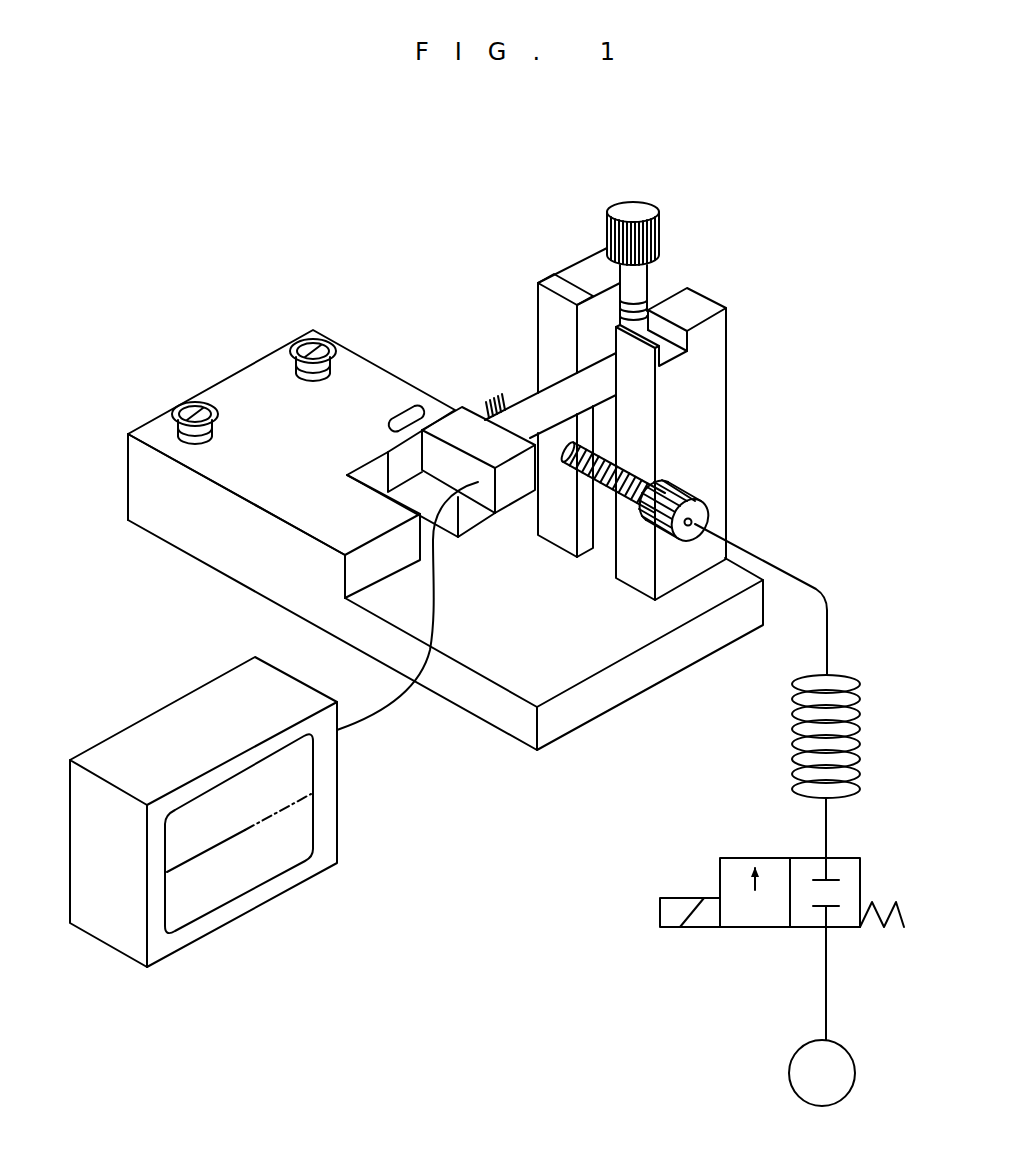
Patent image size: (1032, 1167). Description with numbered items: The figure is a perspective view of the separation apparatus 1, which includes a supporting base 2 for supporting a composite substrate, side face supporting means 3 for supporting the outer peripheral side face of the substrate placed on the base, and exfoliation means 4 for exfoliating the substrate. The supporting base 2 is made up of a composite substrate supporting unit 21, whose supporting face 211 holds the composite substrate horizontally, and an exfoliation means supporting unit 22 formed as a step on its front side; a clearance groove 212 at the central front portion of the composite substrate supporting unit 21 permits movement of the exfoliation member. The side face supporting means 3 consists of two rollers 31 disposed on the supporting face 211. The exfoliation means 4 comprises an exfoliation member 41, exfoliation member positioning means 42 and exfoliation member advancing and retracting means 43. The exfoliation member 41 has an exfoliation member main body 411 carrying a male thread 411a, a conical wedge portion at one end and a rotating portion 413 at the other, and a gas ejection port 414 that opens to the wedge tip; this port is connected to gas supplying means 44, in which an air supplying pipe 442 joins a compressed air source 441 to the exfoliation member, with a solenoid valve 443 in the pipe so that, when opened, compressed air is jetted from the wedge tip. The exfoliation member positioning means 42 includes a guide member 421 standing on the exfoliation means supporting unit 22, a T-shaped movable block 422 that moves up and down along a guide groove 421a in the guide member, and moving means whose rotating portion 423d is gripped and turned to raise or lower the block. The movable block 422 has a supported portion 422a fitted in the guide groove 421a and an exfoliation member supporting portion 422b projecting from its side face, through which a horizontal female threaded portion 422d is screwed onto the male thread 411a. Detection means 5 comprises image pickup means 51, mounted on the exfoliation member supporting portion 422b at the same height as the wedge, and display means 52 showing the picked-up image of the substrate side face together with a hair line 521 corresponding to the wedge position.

The separation apparatus 1 is at (313, 234).
The supporting base 2 is at (354, 334).
The composite substrate supporting unit 21 is at (183, 561).
The supporting face 211 is at (290, 503).
The clearance groove 212 is at (380, 480).
The exfoliation means supporting unit 22 is at (480, 729).
The side face supporting means 3 is at (230, 395).
The roller 31 is at (188, 403).
The exfoliation means 4 is at (708, 250).
The exfoliation member 41 is at (704, 489).
The exfoliation member main body 411 is at (609, 504).
The male thread 411a is at (640, 463).
The rotating portion 413 is at (700, 510).
The gas ejection port 414 is at (660, 563).
The exfoliation member positioning means 42 is at (591, 245).
The guide member 421 is at (737, 352).
The guide groove 421a is at (667, 312).
The movable block 422 is at (531, 392).
The supported portion 422a is at (607, 358).
The exfoliation member supporting portion 422b is at (527, 407).
The female threaded portion 422d is at (548, 452).
The rotating portion 423d is at (657, 248).
The exfoliation member advancing and retracting means 43 is at (596, 445).
The gas supplying means 44 is at (713, 964).
The compressed air source 441 is at (841, 1090).
The air supplying pipe 442 is at (822, 992).
The solenoid valve 443 is at (737, 857).
The detection means 5 is at (504, 514).
The image pickup means 51 is at (483, 500).
The display means 52 is at (345, 840).
The hair line 521 is at (240, 831).